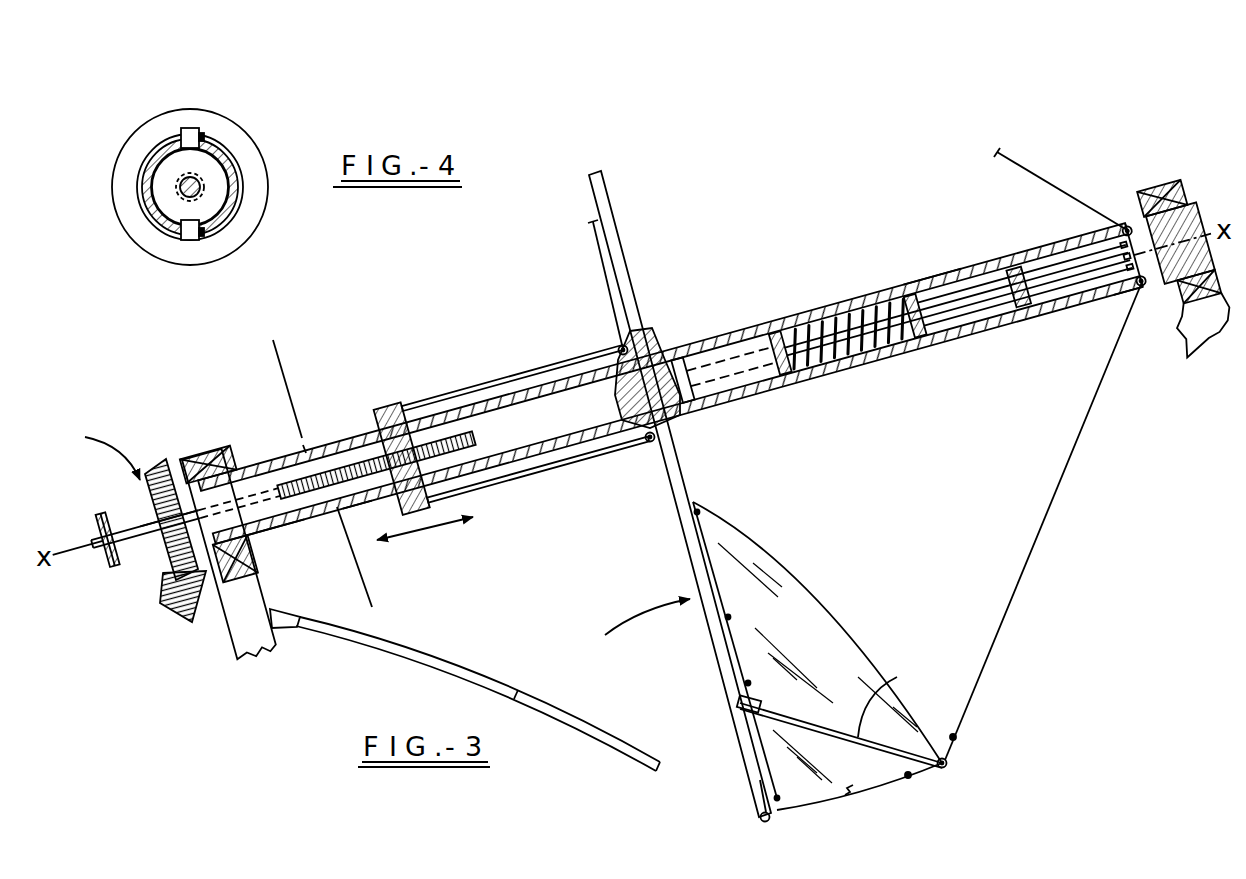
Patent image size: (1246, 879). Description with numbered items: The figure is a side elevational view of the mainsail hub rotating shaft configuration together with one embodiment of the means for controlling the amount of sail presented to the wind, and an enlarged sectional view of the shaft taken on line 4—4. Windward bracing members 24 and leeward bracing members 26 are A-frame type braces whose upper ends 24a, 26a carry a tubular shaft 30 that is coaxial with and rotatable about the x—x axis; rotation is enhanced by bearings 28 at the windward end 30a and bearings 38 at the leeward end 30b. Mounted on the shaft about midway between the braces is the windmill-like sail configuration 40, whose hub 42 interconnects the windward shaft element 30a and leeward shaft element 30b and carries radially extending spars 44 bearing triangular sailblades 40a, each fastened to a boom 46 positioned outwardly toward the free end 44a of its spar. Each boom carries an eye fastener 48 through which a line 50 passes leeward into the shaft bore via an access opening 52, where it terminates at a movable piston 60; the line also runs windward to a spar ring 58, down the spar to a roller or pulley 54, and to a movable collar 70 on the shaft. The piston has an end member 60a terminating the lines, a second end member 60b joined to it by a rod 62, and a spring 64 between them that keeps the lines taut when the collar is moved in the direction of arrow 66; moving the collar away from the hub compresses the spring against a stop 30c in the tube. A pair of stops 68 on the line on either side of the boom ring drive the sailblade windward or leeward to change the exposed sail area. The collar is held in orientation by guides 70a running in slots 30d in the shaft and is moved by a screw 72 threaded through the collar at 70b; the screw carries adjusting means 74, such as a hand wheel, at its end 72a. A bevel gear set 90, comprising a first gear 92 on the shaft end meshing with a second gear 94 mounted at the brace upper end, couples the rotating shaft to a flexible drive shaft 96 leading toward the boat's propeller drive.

In FIG. 3, the section line 4— 4 is at (247, 370).
In FIG. 3, the windward bracing members 24 is at (243, 655).
In FIG. 3, the upper end of windward brace 24a is at (201, 448).
In FIG. 3, the leeward bracing members 26 is at (1190, 342).
In FIG. 3, the upper end of leeward brace 26a is at (1162, 178).
In FIG. 3, the bearings 28 is at (234, 470).
In FIG. 4, the tubular shaft 30 is at (146, 212).
In FIG. 3, the tubular shaft 30 is at (912, 350).
In FIG. 3, the windward shaft element 30a is at (257, 548).
In FIG. 3, the leeward shaft element 30b is at (1183, 318).
In FIG. 3, the stop 30c is at (942, 285).
In FIG. 4, the slots 30d is at (205, 137).
In FIG. 3, the slots 30d is at (328, 505).
In FIG. 3, the bearings 38 is at (1126, 226).
In FIG. 3, the windmill-like sail configuration 40 is at (664, 656).
In FIG. 3, the sailblades 40a is at (812, 612).
In FIG. 3, the hub 42 is at (628, 400).
In FIG. 3, the spars 44 is at (604, 213).
In FIG. 3, the free end of spar 44a is at (757, 800).
In FIG. 3, the boom 46 is at (841, 715).
In FIG. 3, the eye fastener 48 is at (948, 766).
In FIG. 3, the line 50 is at (558, 373).
In FIG. 3, the access opening 52 is at (1140, 286).
In FIG. 3, the roller or pulley 54 is at (620, 346).
In FIG. 3, the eye fastener 58 is at (761, 815).
In FIG. 3, the movable piston 60 is at (998, 285).
In FIG. 3, the piston end member 60a is at (1014, 268).
In FIG. 3, the second piston end member 60b is at (777, 340).
In FIG. 3, the rod 62 is at (812, 362).
In FIG. 3, the spring 64 is at (865, 358).
In FIG. 3, the arrow 66 is at (424, 533).
In FIG. 3, the stops 68 is at (957, 738).
In FIG. 4, the movable collar 70 is at (227, 109).
In FIG. 3, the movable collar 70 is at (388, 408).
In FIG. 4, the guides 70a is at (188, 127).
In FIG. 4, the threaded central portion of collar 70b is at (170, 172).
In FIG. 4, the screw 72 is at (178, 187).
In FIG. 3, the screw 72 is at (340, 466).
In FIG. 3, the end of screw 72a is at (146, 535).
In FIG. 3, the adjusting means 74 is at (100, 514).
In FIG. 3, the bevel gear set 90 is at (94, 451).
In FIG. 3, the first gear 92 is at (158, 463).
In FIG. 3, the second meshing gear 94 is at (184, 614).
In FIG. 3, the flexible drive shaft 96 is at (518, 688).